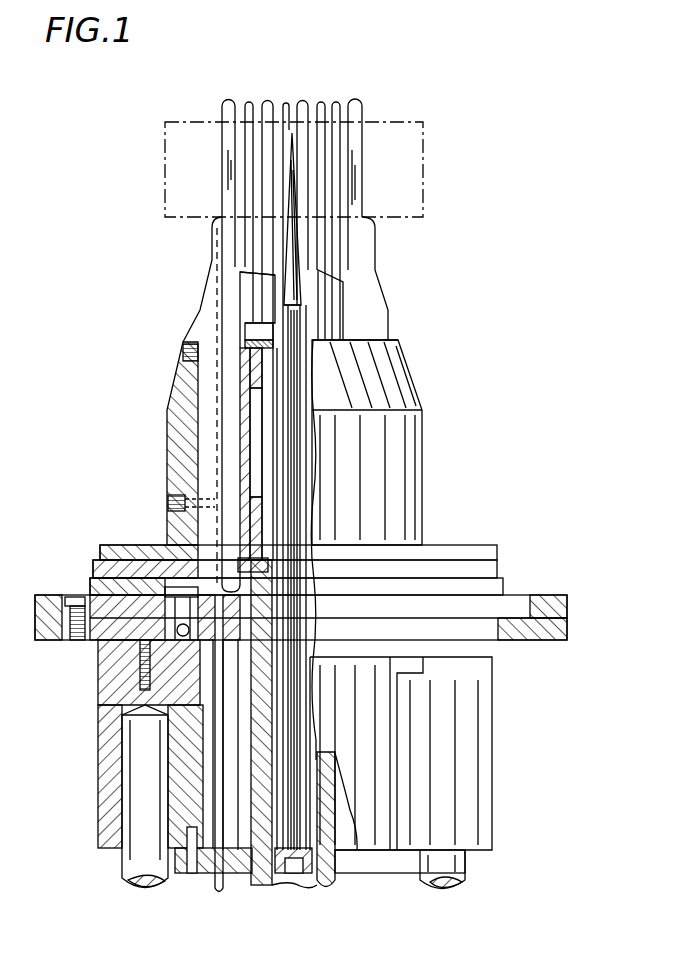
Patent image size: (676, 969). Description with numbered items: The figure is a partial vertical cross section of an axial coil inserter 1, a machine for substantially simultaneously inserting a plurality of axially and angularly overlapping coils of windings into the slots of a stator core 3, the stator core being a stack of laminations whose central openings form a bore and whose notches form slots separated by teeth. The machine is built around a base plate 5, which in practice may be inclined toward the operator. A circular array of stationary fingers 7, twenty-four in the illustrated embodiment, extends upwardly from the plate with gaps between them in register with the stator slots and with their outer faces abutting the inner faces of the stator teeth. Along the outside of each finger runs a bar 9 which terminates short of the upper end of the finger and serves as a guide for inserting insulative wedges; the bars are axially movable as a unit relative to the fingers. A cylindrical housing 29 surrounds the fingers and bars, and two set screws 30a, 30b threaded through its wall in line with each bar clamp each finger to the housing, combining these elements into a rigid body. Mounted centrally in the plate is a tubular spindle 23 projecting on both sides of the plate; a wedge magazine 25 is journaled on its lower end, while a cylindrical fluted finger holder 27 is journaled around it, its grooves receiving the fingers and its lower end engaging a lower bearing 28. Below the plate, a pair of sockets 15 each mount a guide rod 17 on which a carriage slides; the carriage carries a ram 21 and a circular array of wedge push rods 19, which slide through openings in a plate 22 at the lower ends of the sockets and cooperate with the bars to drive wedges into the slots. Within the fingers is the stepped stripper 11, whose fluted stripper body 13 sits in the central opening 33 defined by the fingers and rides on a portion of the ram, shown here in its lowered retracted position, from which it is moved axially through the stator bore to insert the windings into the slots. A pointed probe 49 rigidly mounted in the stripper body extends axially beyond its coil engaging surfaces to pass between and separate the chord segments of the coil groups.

The axial coil inserter 1 is at (486, 259).
The stator core 3 is at (162, 182).
The base plate 5 is at (548, 596).
The fingers 7 is at (362, 100).
The bars 9 is at (210, 298).
The stepped stripper 11 is at (258, 274).
The stripper body 13 is at (254, 312).
The sockets 15 is at (98, 764).
The guide rod 17 is at (125, 867).
The wedge push rods 19 is at (220, 893).
The ram 21 is at (331, 888).
The plate 22 is at (389, 866).
The tubular spindle 23 is at (222, 693).
The wedge magazine 25 is at (212, 818).
The finger holder 27 is at (243, 462).
The lower bearing 28 is at (176, 628).
The cylindrical housing 29 is at (165, 518).
The set screw 30a is at (185, 405).
The set screw 30b is at (183, 499).
The central opening 33 is at (258, 233).
The pointed probe 49 is at (297, 200).